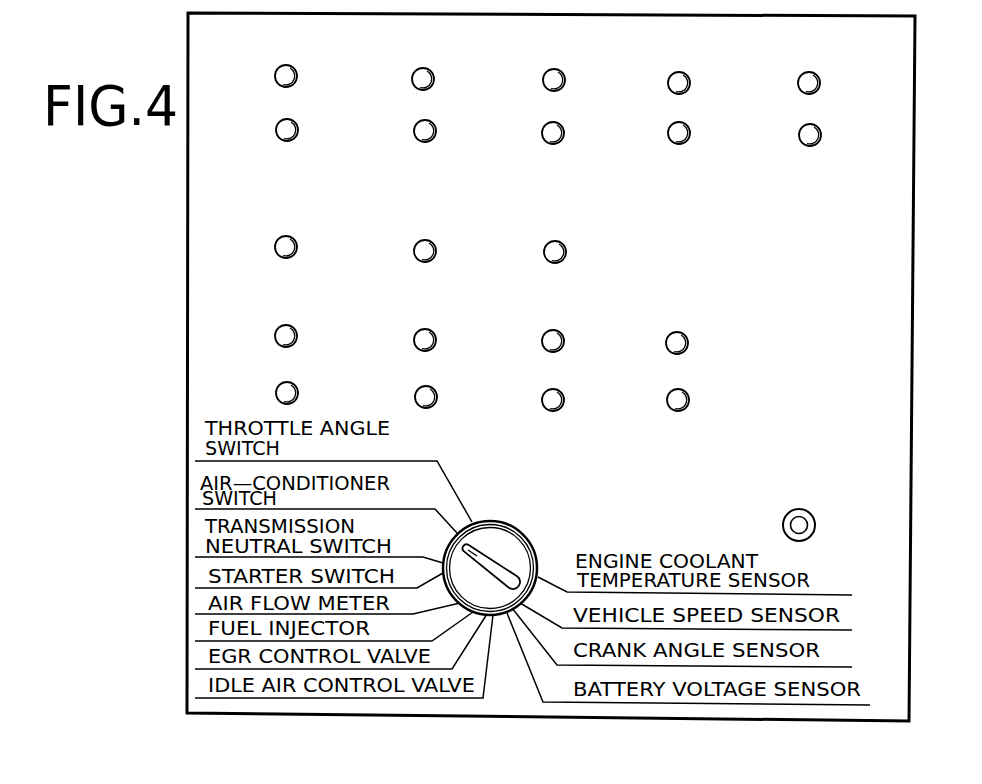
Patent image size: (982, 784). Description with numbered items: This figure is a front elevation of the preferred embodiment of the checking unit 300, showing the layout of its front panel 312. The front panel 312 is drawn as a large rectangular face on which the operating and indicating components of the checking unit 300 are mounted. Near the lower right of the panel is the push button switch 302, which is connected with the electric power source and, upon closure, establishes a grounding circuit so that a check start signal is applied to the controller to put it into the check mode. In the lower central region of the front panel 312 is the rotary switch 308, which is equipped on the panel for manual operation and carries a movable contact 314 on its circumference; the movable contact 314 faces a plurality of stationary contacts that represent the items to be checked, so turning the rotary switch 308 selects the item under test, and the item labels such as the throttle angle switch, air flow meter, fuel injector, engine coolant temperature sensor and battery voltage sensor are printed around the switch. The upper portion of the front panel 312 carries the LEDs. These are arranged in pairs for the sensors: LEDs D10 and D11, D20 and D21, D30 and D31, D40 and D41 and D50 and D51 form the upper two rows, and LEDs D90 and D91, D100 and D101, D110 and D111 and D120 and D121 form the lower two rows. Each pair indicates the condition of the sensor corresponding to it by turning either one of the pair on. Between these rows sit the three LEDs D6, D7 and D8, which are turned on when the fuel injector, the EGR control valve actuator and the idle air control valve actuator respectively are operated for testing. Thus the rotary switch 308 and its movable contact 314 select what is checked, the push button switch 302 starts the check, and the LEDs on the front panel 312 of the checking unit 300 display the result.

The checking unit 300 is at (503, 718).
The push button switch 302 is at (812, 530).
The rotary switch 308 is at (507, 543).
The front panel 312 is at (887, 415).
The movable contact 314 is at (484, 557).
The LED D10 is at (271, 76).
The LED D11 is at (272, 130).
The LED D20 is at (408, 79).
The LED D21 is at (410, 131).
The LED D30 is at (539, 80).
The LED D31 is at (538, 133).
The LED D40 is at (664, 83).
The LED D41 is at (664, 133).
The LED D50 is at (794, 83).
The LED D51 is at (795, 135).
The LED D6 is at (274, 247).
The LED D7 is at (414, 251).
The LED D8 is at (544, 252).
The LED D90 is at (271, 336).
The LED D91 is at (272, 393).
The LED D100 is at (406, 340).
The LED D101 is at (407, 397).
The LED D110 is at (534, 341).
The LED D111 is at (534, 400).
The LED D120 is at (658, 343).
The LED D121 is at (659, 400).